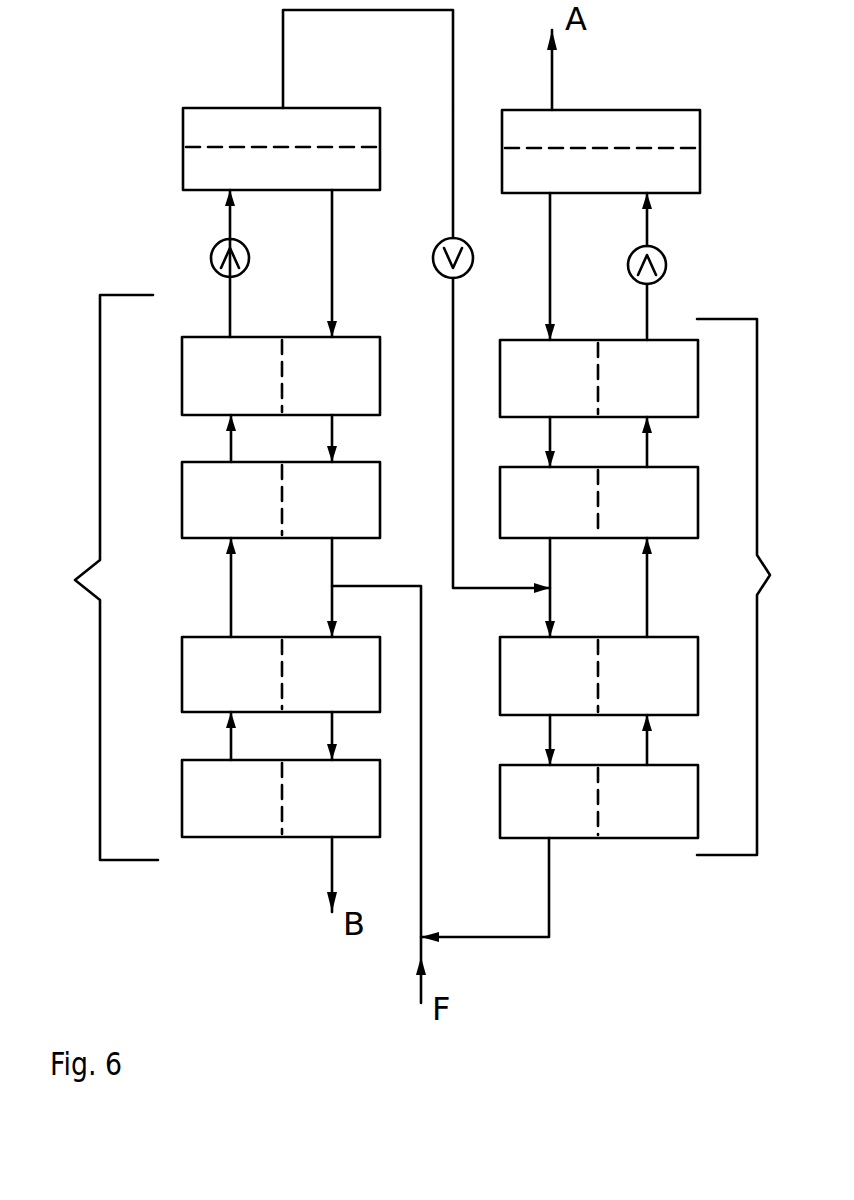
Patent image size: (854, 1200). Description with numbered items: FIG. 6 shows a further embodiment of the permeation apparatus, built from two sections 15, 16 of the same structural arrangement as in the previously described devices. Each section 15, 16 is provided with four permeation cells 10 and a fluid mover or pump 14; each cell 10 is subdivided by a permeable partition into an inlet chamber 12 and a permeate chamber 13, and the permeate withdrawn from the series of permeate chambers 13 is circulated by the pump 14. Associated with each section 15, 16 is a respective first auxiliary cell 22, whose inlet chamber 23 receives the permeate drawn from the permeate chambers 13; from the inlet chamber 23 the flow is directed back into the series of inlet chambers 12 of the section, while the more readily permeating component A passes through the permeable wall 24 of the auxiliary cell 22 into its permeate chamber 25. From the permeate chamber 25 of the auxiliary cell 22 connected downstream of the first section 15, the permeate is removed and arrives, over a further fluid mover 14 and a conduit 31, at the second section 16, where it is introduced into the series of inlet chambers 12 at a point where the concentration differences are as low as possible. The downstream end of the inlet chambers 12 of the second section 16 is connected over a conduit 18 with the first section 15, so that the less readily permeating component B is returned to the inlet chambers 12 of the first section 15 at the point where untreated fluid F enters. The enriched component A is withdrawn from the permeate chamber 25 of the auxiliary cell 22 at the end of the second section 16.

The permeation stage or cell 10 is at (180, 530).
The inlet chamber 12 is at (356, 396).
The permeate chamber 13 is at (254, 396).
The fluid mover or pump 14 is at (212, 250).
The first section 15 is at (100, 577).
The second section 16 is at (749, 587).
The conduit 18 is at (549, 886).
The first auxiliary cell 22 is at (247, 108).
The inlet chamber of auxiliary cell 23 is at (302, 184).
The permeable wall 24 is at (220, 147).
The permeate chamber of auxiliary cell 25 is at (302, 142).
The conduit 31 is at (453, 300).